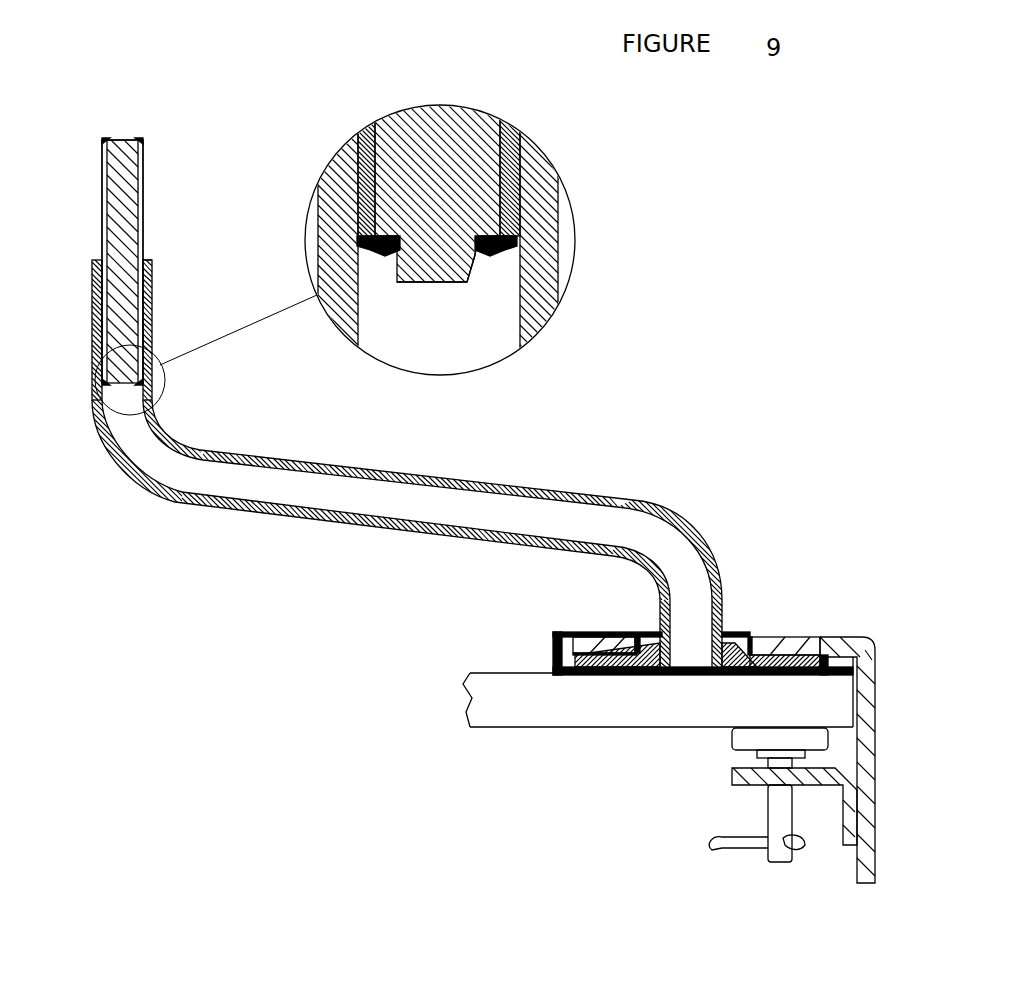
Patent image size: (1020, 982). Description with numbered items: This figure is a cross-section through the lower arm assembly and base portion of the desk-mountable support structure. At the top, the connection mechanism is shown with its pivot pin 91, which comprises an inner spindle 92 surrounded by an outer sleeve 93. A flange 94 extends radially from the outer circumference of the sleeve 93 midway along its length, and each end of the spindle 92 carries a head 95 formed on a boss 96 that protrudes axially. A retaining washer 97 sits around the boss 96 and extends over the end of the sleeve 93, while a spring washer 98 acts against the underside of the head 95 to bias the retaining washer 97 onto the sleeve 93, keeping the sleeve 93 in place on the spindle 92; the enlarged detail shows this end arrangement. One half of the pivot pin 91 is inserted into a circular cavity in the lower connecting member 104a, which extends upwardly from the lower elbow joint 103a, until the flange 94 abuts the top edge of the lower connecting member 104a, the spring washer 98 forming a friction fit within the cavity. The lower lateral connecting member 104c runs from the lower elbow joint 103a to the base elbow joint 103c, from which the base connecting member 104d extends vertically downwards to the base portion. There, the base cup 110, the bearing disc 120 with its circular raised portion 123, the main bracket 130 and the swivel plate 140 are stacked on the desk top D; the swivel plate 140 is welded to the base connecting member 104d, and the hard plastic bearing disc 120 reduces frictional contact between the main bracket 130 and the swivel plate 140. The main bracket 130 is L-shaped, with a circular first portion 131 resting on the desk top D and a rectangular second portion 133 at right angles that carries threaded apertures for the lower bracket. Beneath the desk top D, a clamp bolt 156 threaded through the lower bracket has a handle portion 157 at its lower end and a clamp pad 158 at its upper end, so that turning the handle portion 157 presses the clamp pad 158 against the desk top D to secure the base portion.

The pivot pin 91 is at (100, 202).
The inner spindle 92 is at (120, 150).
The outer sleeve 93 is at (143, 192).
The flange 94 is at (150, 262).
The head 95 is at (108, 137).
The boss 96 is at (468, 285).
The retaining washer 97 is at (358, 215).
The spring washer 98 is at (140, 138).
The lower elbow joint 103a is at (124, 472).
The base elbow joint 103c is at (690, 535).
The lower connecting member 104a is at (152, 290).
The lower lateral connecting member 104c is at (355, 532).
The base connecting member 104d is at (723, 617).
The base cup 110 is at (545, 655).
The bearing disc 120 is at (786, 644).
The circular raised portion 123 is at (642, 635).
The main bracket 130 is at (863, 630).
The first portion 131 is at (822, 645).
The second portion 133 is at (870, 828).
The swivel plate 140 is at (590, 637).
The clamp bolt 156 is at (783, 808).
The handle portion 157 is at (737, 842).
The clamp pad 158 is at (745, 738).
The desk or table top D is at (521, 743).